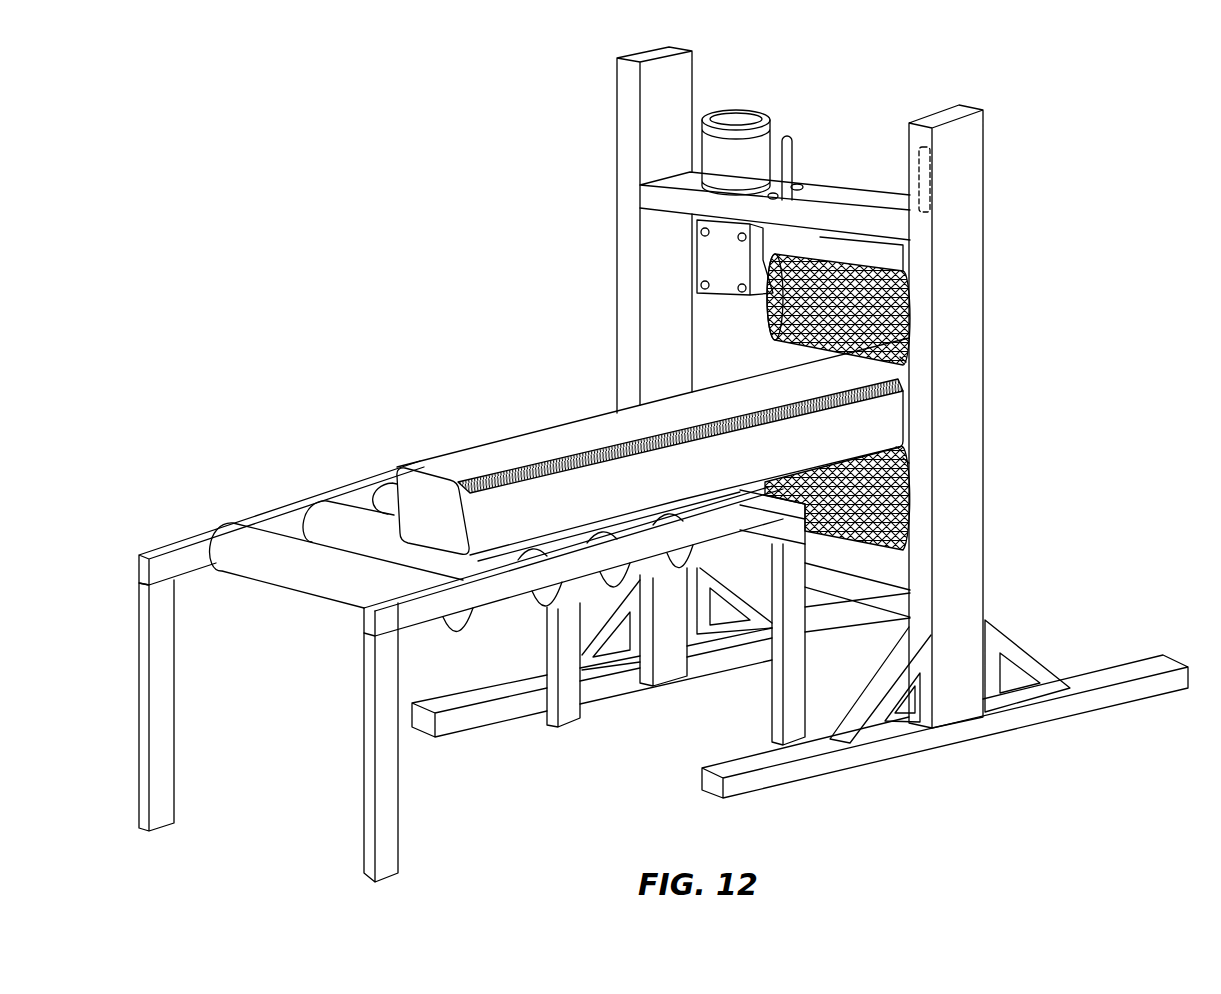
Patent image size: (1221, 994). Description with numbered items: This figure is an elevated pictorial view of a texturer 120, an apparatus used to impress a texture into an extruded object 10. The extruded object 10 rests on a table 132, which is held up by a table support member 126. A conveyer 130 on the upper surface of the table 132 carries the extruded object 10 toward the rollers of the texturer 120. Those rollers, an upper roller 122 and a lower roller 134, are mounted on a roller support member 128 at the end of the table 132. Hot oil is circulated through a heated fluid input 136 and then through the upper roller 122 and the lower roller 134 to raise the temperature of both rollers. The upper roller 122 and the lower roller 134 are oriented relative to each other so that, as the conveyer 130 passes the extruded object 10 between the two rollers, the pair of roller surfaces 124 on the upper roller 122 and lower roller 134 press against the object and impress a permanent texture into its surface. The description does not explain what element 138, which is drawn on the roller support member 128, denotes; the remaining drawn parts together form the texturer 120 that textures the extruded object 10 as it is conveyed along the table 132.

The extruded object 10 is at (487, 475).
The texturer 120 is at (436, 226).
The upper roller 122 is at (903, 333).
The roller surfaces 124 is at (910, 462).
The table support member 126 is at (775, 713).
The roller support member 128 is at (958, 568).
The conveyer 130 is at (325, 513).
The table 132 is at (192, 538).
The lower roller 134 is at (903, 505).
The heated fluid input 136 is at (793, 137).
The slot 138 is at (919, 166).